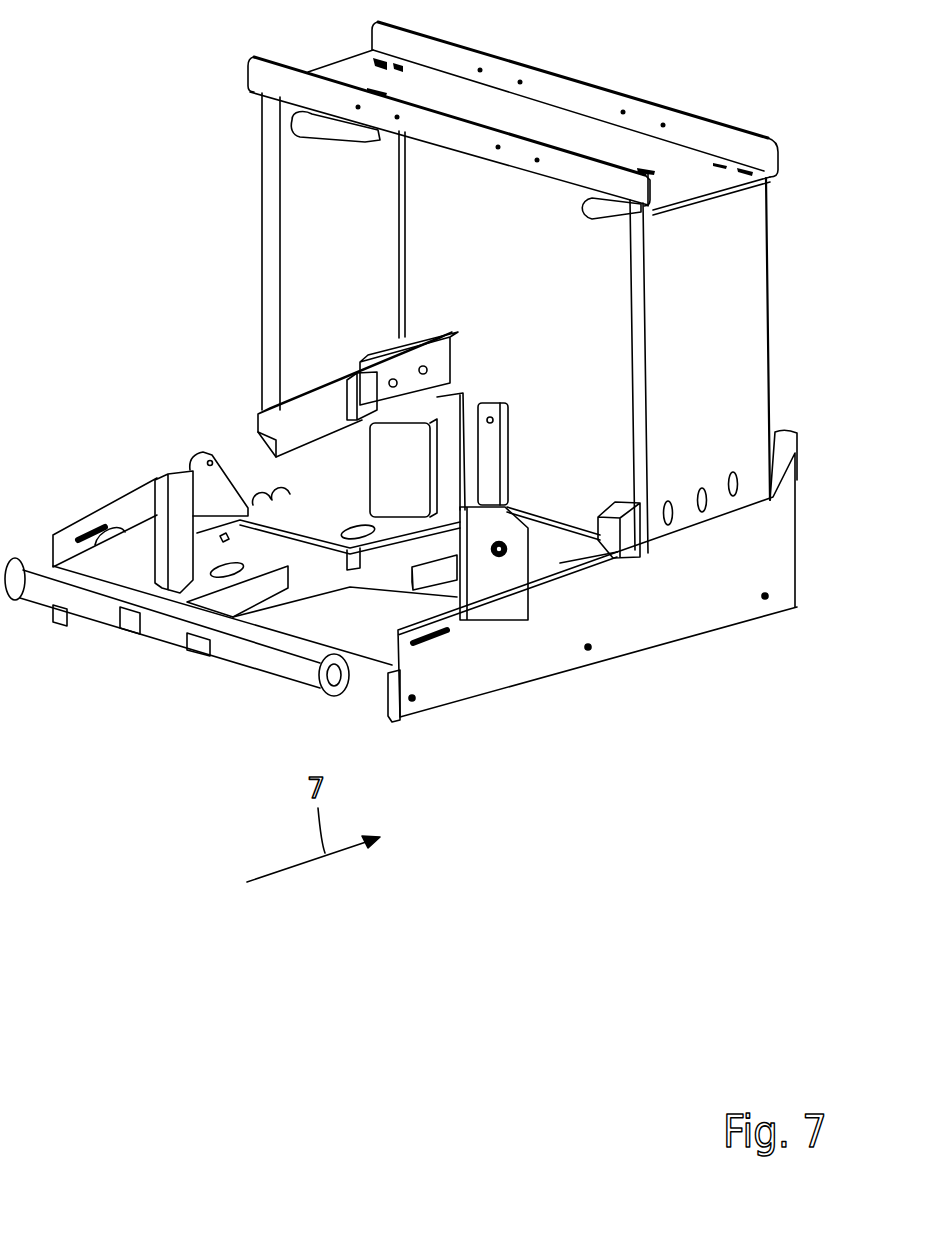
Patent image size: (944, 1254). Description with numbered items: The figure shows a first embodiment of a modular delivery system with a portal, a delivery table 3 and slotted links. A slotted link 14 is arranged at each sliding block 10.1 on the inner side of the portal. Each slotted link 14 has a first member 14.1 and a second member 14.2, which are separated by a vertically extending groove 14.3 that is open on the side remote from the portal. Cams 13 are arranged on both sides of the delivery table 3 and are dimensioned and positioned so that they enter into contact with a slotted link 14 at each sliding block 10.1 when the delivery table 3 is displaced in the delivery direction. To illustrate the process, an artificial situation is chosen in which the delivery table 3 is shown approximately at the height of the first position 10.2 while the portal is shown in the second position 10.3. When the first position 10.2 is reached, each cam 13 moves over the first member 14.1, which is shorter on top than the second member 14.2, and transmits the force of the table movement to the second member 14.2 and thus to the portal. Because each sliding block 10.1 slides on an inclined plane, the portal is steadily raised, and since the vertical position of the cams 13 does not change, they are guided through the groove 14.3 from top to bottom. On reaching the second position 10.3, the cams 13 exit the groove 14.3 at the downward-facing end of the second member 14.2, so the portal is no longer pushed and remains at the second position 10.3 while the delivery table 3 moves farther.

The delivery table 3 is at (297, 632).
The cam 13 is at (186, 456).
The slotted link 14 is at (120, 352).
The first member 14.1 is at (350, 405).
The second member 14.2 is at (407, 373).
The groove 14.3 is at (363, 373).
The sliding block 10.1 is at (622, 510).
The first position 10.2 is at (458, 617).
The second position 10.3 is at (702, 517).